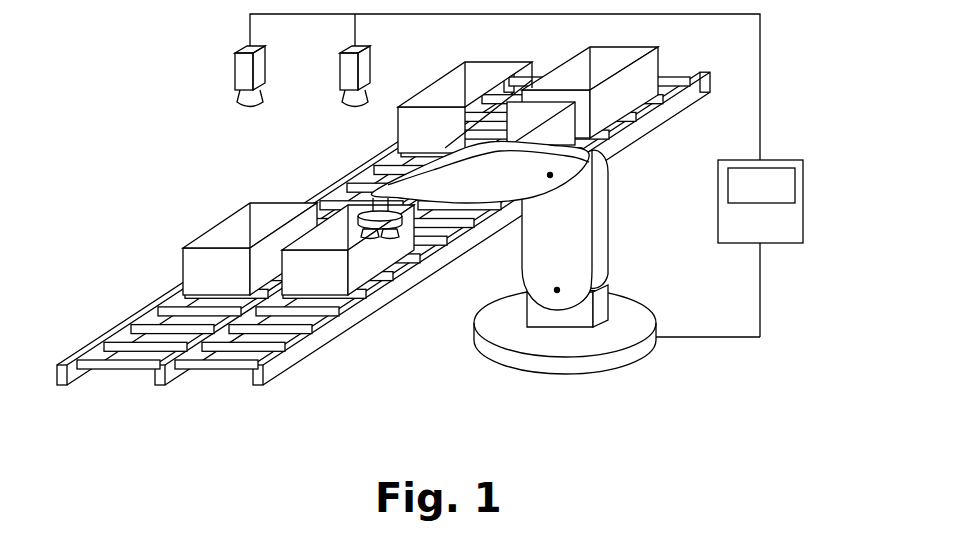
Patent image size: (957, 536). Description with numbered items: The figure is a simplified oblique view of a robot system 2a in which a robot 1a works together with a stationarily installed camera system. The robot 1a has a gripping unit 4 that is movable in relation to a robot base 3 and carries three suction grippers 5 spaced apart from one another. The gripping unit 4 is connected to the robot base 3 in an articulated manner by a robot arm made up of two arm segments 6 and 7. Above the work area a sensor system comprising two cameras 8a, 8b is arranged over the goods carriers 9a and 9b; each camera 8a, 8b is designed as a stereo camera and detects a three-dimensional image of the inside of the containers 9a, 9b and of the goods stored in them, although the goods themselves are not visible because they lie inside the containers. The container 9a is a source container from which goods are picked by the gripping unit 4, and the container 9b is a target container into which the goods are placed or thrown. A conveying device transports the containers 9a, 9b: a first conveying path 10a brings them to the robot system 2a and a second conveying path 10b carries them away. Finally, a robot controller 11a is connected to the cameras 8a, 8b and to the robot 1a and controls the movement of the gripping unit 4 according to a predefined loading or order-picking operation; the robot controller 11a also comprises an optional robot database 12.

The robot 1a is at (490, 267).
The robot system 2a is at (368, 257).
The robot base 3 is at (598, 364).
The gripping unit 4 is at (388, 220).
The suction grippers 5 is at (397, 233).
The arm segment 6 is at (602, 223).
The arm segment 7 is at (418, 183).
The camera 8a is at (240, 75).
The camera 8b is at (362, 72).
The source container 9a is at (197, 273).
The target container 9b is at (357, 272).
The first conveying path 10a is at (117, 388).
The second conveying path 10b is at (210, 387).
The robot controller 11a is at (790, 227).
The robot database 12 is at (782, 190).